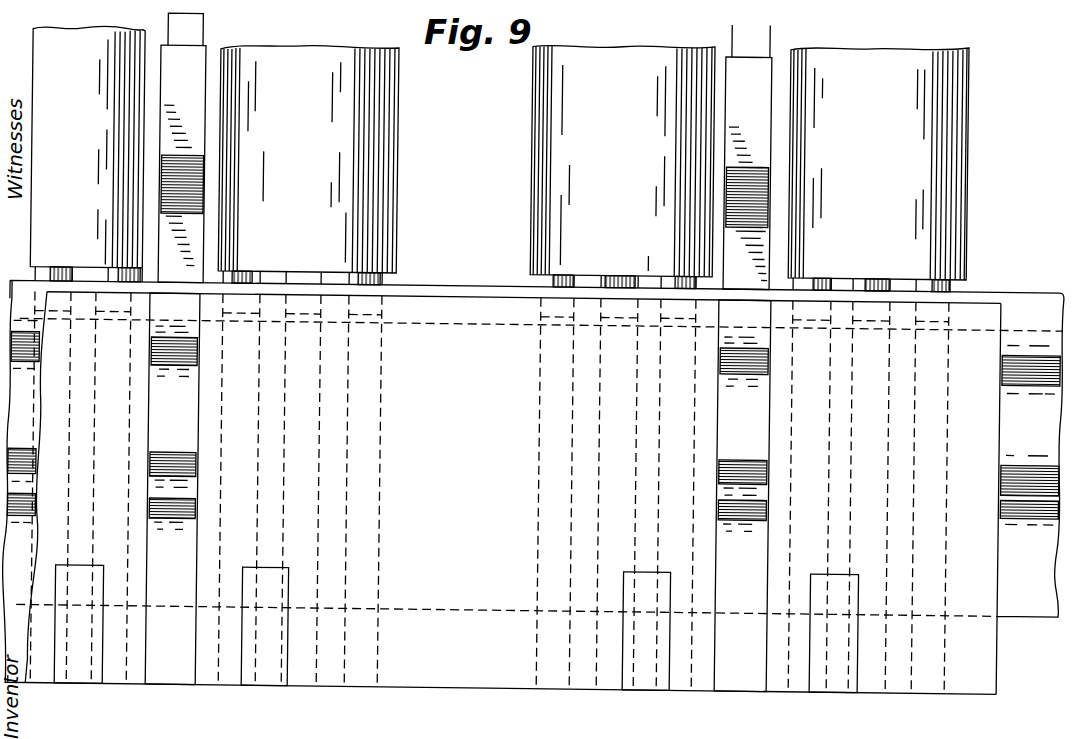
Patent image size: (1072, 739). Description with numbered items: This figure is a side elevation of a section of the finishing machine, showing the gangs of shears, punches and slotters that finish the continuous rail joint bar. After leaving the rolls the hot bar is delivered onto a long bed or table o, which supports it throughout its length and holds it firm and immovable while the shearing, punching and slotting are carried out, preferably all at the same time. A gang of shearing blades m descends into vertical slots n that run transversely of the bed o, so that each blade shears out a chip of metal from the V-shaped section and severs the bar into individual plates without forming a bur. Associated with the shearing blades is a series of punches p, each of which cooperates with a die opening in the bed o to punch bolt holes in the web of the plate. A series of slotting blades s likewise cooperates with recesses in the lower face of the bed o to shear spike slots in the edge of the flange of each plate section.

The cylinder c is at (938, 160).
The shearing blade m is at (186, 62).
The punch p is at (384, 276).
The bed or table o is at (532, 487).
The vertical slot n is at (200, 486).
The slotting blade s is at (86, 582).